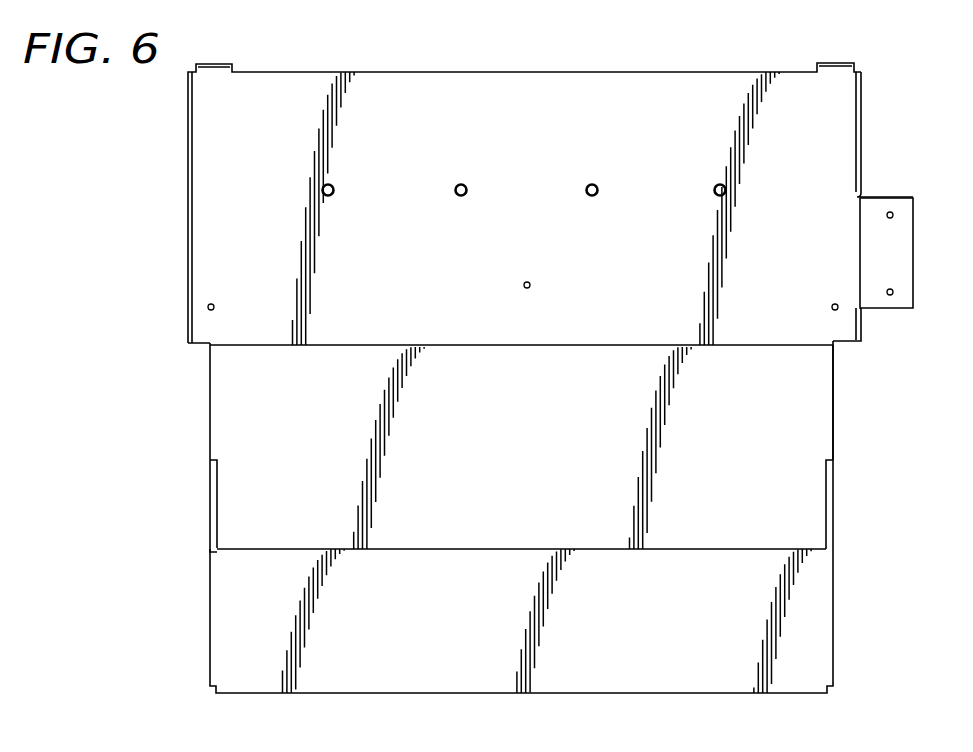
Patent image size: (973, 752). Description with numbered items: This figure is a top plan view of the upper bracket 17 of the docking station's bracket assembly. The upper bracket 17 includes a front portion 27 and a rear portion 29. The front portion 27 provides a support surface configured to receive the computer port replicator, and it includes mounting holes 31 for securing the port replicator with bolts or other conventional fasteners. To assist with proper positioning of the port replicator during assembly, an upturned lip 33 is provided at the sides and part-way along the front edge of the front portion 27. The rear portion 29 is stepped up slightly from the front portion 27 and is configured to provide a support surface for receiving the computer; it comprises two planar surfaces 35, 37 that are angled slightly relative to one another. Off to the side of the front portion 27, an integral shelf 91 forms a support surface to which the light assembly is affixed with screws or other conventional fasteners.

The upper bracket 17 is at (834, 398).
The front portion 27 is at (683, 243).
The rear portion 29 is at (210, 521).
The mounting holes 31 is at (585, 188).
The upturned lip 33 is at (862, 125).
The planar surface 35 is at (549, 458).
The planar surface 37 is at (547, 623).
The integral shelf 91 is at (898, 252).